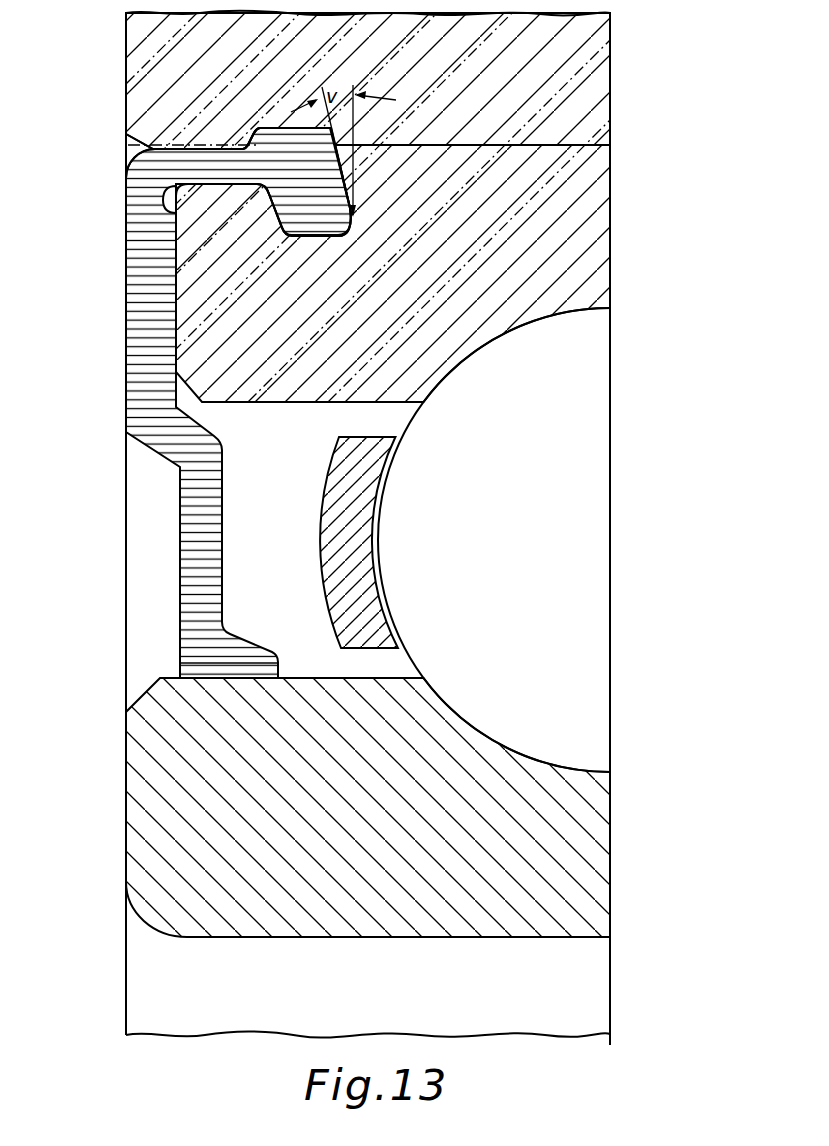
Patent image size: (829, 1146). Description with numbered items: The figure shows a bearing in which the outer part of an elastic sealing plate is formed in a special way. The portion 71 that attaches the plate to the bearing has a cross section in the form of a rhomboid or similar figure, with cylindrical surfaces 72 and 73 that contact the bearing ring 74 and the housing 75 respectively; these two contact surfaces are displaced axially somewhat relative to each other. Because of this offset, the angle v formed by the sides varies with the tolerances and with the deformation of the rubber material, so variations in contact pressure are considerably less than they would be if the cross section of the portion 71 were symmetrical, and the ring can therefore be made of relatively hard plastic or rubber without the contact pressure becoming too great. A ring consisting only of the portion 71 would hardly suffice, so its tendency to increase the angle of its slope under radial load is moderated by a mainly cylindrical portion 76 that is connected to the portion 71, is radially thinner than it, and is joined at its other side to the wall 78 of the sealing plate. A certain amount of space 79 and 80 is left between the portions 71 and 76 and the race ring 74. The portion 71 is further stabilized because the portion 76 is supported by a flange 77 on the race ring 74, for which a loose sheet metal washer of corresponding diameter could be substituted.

The attaching portion of the sealing plate 71 is at (310, 177).
The cylindrical surface 72 is at (310, 238).
The cylindrical surface 73 is at (272, 115).
The bearing ring 74 is at (508, 220).
The housing 75 is at (495, 75).
The mainly cylindrical portion 76 is at (190, 154).
The flange 77 is at (170, 197).
The wall of the sealing plate 78 is at (152, 313).
The space 79 is at (176, 320).
The space 80 is at (178, 244).